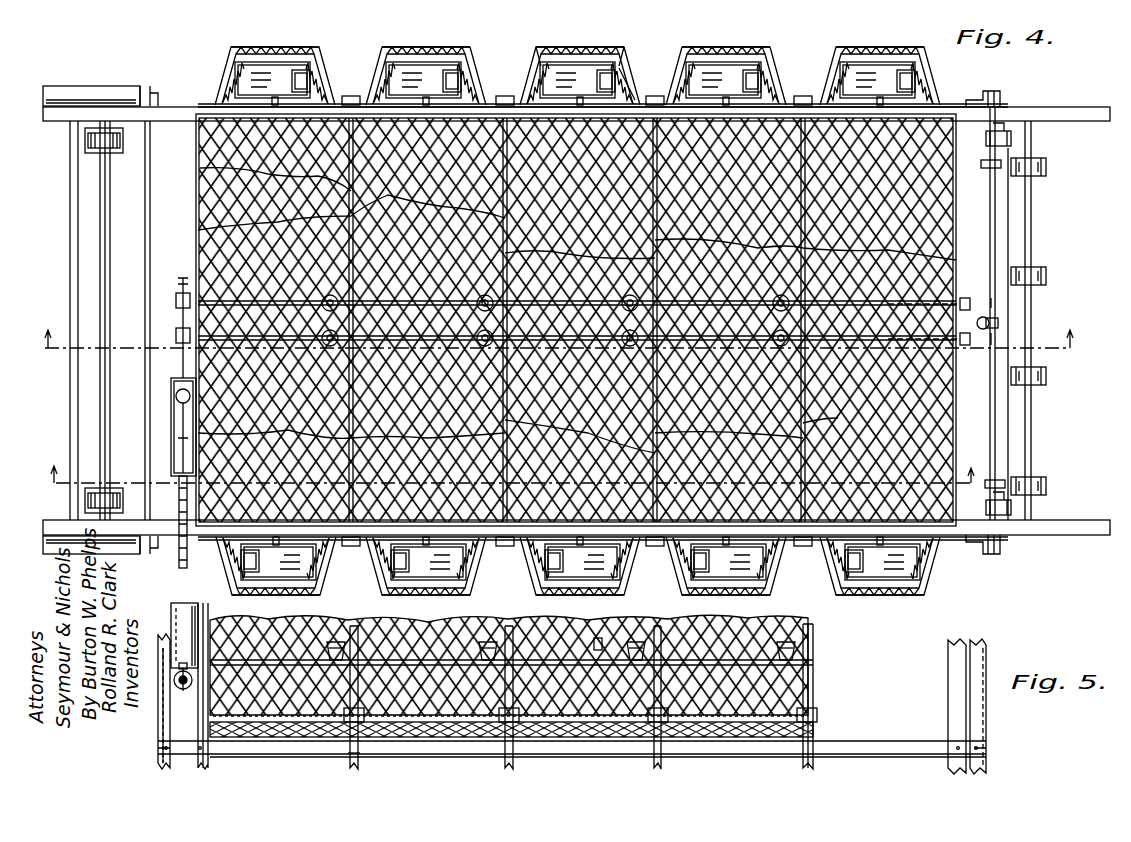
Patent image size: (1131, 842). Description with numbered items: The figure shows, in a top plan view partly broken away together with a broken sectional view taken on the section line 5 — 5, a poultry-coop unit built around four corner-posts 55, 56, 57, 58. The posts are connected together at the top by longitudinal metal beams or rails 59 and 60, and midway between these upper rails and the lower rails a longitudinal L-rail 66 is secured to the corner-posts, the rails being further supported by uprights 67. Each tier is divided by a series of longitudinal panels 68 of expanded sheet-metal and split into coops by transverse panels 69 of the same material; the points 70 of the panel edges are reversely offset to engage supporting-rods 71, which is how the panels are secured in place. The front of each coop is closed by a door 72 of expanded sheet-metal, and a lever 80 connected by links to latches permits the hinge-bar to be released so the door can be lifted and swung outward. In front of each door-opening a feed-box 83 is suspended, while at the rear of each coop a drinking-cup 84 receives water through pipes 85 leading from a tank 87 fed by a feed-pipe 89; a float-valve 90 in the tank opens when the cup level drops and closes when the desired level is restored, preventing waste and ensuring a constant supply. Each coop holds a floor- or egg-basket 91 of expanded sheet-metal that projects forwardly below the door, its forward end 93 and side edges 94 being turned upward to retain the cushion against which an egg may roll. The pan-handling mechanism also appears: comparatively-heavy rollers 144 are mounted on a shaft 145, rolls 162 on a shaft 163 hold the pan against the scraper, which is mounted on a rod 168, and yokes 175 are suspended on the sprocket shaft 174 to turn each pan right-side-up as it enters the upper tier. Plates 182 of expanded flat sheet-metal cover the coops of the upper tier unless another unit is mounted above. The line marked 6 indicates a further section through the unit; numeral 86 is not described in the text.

In FIG. 4, the section line 5- 5 is at (507, 465).
In FIG. 4, the section line 6- 6 is at (557, 328).
In FIG. 4, the corner-post 55 is at (157, 548).
In FIG. 4, the corner-post 56 is at (975, 547).
In FIG. 4, the corner-post 57 is at (156, 96).
In FIG. 5, the corner-post 57 is at (151, 746).
In FIG. 4, the corner-post 58 is at (966, 94).
In FIG. 5, the corner-post 58 is at (980, 727).
In FIG. 4, the longitudinal metal beam or rail 59 is at (1080, 528).
In FIG. 4, the longitudinal metal beam or rail 60 is at (1078, 104).
In FIG. 5, the longitudinal L-rail 66 is at (896, 735).
In FIG. 4, the upright 67 is at (345, 88).
In FIG. 5, the upright 67 is at (500, 760).
In FIG. 4, the longitudinal panel 68 is at (180, 310).
In FIG. 5, the longitudinal panel 68 is at (590, 630).
In FIG. 4, the transverse panel 69 is at (190, 222).
In FIG. 5, the transverse panel 69 is at (500, 626).
In FIG. 5, the points of the panel edges 70 is at (806, 713).
In FIG. 5, the supporting-rod 71 is at (806, 702).
In FIG. 4, the door 72 is at (210, 95).
In FIG. 4, the lever 80 is at (268, 78).
In FIG. 4, the feed-box 83 is at (264, 42).
In FIG. 4, the drinking-cup 84 is at (318, 288).
In FIG. 5, the drinking-cup 84 is at (330, 632).
In FIG. 4, the pipe 85 is at (190, 266).
In FIG. 5, the pipe 85 is at (436, 630).
In FIG. 4, the right fitting 86 is at (957, 292).
In FIG. 4, the tank 87 is at (165, 418).
In FIG. 5, the tank 87 is at (165, 597).
In FIG. 4, the feed-pipe 89 is at (177, 562).
In FIG. 5, the feed-pipe 89 is at (177, 654).
In FIG. 4, the float-valve 90 is at (168, 392).
In FIG. 4, the floor- or egg-basket 91 is at (318, 60).
In FIG. 5, the floor- or egg-basket 91 is at (734, 742).
In FIG. 4, the forward end of the basket 93 is at (576, 46).
In FIG. 4, the side edges of the basket 94 is at (617, 63).
In FIG. 4, the roller 144 is at (117, 142).
In FIG. 4, the shaft 145 is at (92, 252).
In FIG. 4, the roll 162 is at (1037, 276).
In FIG. 4, the shaft 163 is at (1025, 220).
In FIG. 4, the rod 168 is at (988, 440).
In FIG. 4, the shaft 174 is at (1000, 402).
In FIG. 4, the yoke 175 is at (1005, 133).
In FIG. 4, the plate 182 is at (195, 160).